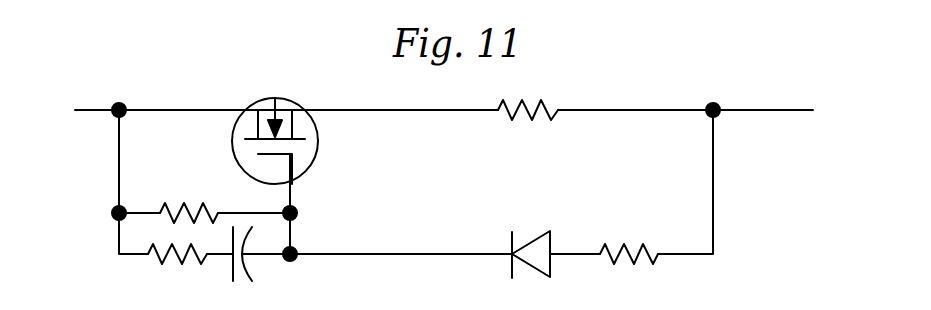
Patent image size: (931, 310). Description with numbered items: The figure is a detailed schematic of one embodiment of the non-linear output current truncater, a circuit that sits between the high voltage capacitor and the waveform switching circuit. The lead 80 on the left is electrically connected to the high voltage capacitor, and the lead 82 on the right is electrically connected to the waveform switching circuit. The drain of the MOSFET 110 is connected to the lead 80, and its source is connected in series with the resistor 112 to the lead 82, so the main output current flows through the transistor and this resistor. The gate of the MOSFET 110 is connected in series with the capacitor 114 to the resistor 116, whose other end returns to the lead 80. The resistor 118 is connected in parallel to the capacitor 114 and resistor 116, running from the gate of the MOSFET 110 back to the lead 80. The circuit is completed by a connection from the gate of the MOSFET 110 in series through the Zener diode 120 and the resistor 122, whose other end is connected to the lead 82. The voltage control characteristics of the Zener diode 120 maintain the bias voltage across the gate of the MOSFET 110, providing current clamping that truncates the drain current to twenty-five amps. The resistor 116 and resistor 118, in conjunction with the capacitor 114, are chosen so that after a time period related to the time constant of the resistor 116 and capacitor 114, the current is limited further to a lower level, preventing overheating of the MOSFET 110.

The lead 80 is at (90, 110).
The lead 82 is at (757, 110).
The MOSFET 110 is at (289, 98).
The resistor 112 is at (543, 102).
The capacitor 114 is at (250, 268).
The resistor 116 is at (178, 258).
The resistor 118 is at (205, 201).
The Zener diode 120 is at (552, 238).
The resistor 122 is at (644, 246).